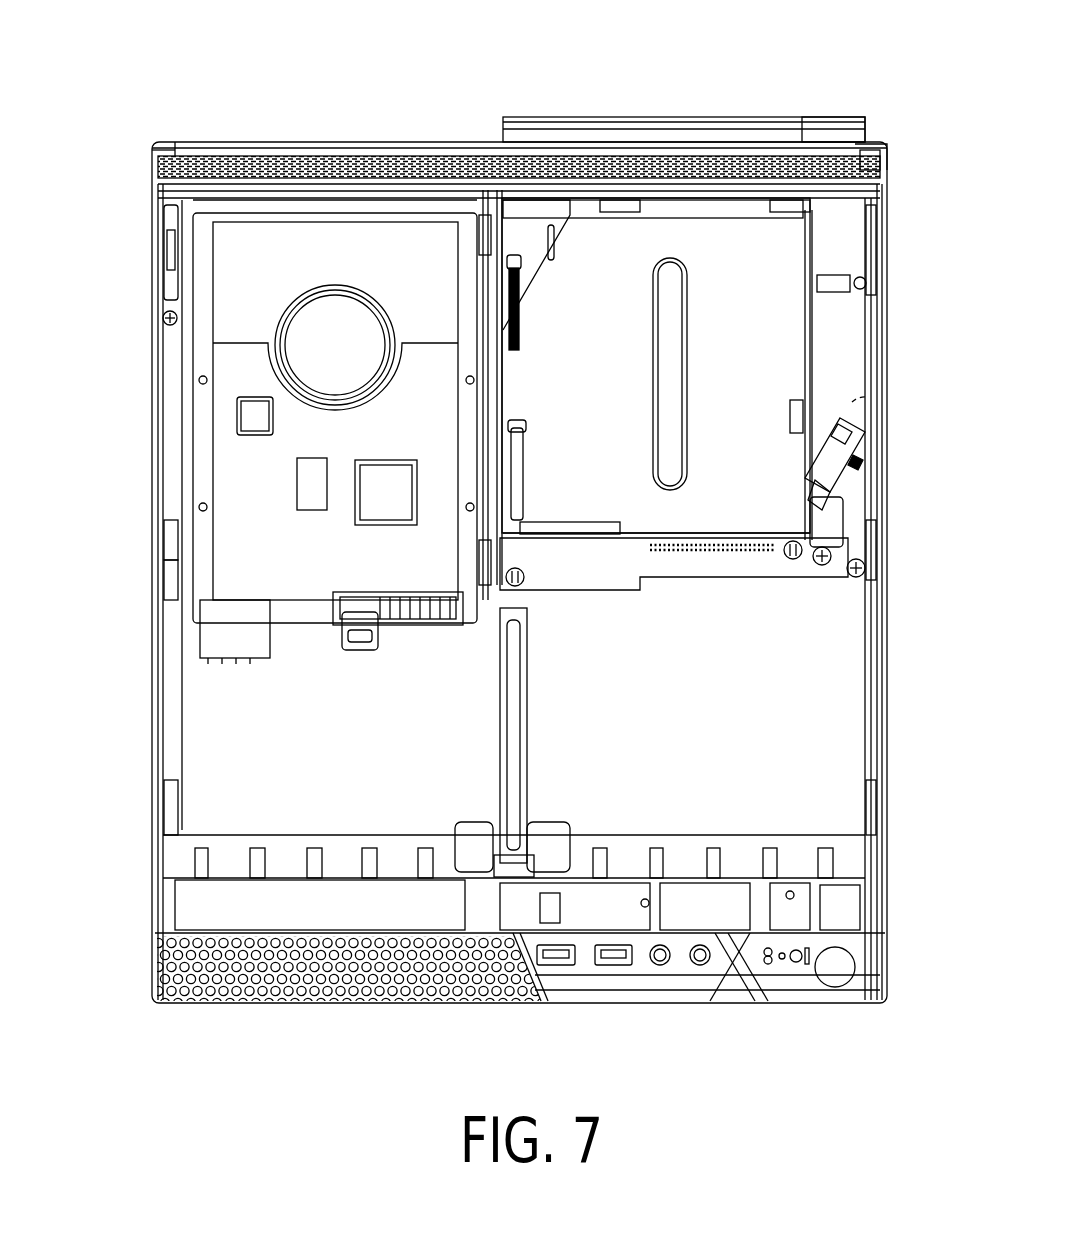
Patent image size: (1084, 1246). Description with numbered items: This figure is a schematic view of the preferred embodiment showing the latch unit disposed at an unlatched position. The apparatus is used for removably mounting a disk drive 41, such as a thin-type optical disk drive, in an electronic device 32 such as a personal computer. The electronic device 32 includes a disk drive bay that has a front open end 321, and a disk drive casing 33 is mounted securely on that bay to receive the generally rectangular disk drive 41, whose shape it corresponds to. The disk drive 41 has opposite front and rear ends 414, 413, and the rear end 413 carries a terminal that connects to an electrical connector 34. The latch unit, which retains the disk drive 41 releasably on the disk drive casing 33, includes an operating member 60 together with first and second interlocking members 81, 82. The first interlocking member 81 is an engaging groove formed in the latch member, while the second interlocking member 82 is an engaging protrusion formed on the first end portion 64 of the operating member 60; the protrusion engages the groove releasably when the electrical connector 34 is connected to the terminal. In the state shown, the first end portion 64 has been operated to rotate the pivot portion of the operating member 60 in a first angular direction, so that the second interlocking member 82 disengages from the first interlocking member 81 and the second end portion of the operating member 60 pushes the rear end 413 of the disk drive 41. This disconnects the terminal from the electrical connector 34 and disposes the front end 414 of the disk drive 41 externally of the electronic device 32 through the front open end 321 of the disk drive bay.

The electronic device 32 is at (152, 350).
The disk drive casing 33 is at (843, 337).
The front open end 321 is at (874, 140).
The electrical connector 34 is at (610, 585).
The disk drive 41 is at (567, 112).
The rear end 413 is at (690, 533).
The front end 414 is at (685, 117).
The operating member 60 is at (855, 455).
The first end portion 64 is at (845, 437).
The first interlocking member 81 is at (808, 410).
The second interlocking member 82 is at (855, 398).